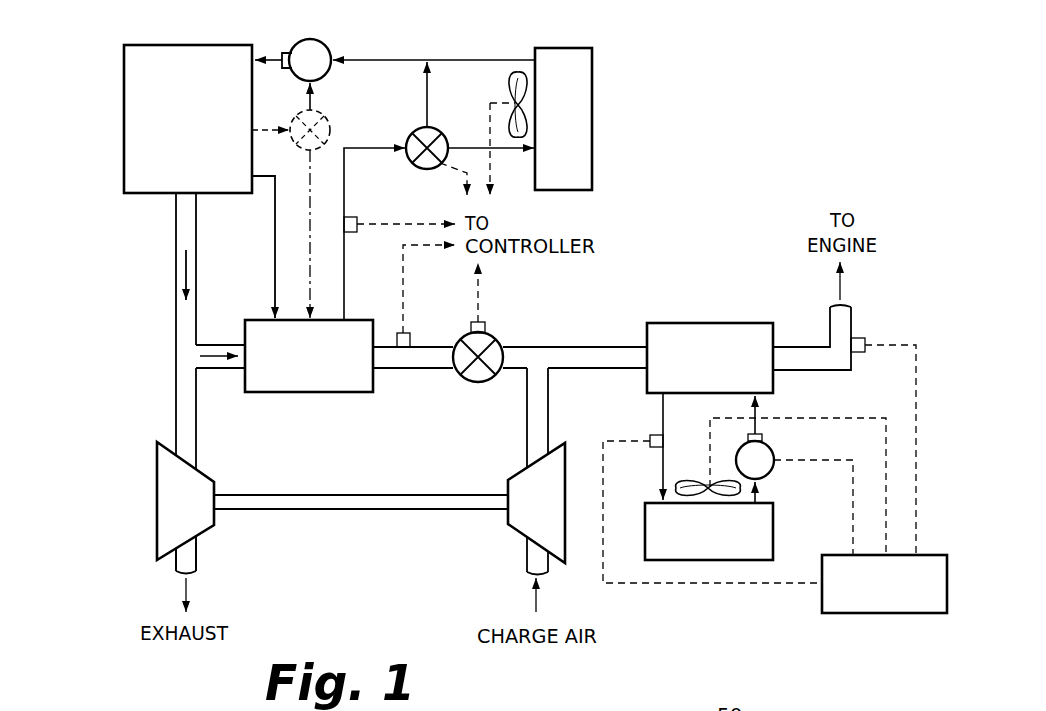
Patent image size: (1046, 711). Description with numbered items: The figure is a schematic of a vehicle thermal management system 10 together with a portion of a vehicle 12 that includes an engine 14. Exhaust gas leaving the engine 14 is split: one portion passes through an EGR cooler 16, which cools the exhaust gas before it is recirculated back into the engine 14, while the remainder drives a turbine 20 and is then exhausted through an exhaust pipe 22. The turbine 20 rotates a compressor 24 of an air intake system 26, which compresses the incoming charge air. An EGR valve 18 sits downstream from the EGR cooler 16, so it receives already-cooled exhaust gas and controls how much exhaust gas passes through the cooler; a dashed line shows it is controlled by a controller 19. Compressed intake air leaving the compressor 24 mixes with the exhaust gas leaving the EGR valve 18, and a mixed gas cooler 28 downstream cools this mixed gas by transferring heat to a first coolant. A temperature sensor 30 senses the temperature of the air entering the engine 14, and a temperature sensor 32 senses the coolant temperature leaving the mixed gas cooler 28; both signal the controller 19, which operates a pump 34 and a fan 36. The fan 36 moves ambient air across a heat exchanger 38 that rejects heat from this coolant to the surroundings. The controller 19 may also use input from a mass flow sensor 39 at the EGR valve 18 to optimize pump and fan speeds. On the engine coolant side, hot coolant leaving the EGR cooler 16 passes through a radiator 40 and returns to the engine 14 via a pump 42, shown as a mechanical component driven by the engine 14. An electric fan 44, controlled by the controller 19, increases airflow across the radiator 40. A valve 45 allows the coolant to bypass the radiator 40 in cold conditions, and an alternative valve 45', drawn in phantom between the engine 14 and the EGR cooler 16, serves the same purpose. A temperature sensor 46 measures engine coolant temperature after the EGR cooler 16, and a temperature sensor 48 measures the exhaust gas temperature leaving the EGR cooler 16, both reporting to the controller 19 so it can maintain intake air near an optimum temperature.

The vehicle thermal management system 10 is at (717, 70).
The vehicle 12 is at (104, 186).
The engine 14 is at (160, 45).
The EGR cooler 16 is at (330, 393).
The EGR valve 18 is at (473, 382).
The controller 19 is at (895, 613).
The turbine 20 is at (157, 478).
The exhaust pipe 22 is at (200, 556).
The compressor 24 is at (518, 530).
The air intake system 26 is at (507, 443).
The mixed gas cooler 28 is at (682, 323).
The temperature sensor 30 is at (860, 338).
The temperature sensor 32 is at (652, 433).
The pump 34 is at (768, 447).
The fan 36 is at (705, 480).
The heat exchanger 38 is at (730, 560).
The mass flow sensor 39 is at (487, 332).
The radiator 40 is at (575, 48).
The pump 42 is at (323, 42).
The electric fan 44 is at (512, 80).
The valve 45 is at (439, 191).
The valve 45' is at (318, 200).
The temperature sensor 46 is at (357, 218).
The temperature sensor 48 is at (410, 338).